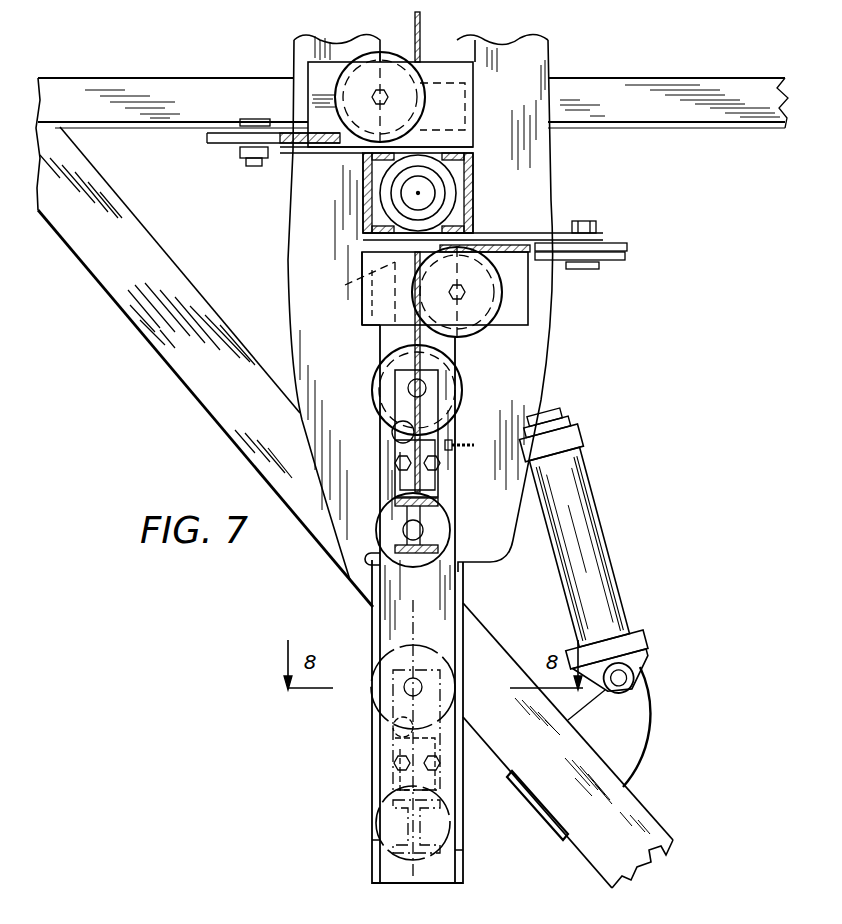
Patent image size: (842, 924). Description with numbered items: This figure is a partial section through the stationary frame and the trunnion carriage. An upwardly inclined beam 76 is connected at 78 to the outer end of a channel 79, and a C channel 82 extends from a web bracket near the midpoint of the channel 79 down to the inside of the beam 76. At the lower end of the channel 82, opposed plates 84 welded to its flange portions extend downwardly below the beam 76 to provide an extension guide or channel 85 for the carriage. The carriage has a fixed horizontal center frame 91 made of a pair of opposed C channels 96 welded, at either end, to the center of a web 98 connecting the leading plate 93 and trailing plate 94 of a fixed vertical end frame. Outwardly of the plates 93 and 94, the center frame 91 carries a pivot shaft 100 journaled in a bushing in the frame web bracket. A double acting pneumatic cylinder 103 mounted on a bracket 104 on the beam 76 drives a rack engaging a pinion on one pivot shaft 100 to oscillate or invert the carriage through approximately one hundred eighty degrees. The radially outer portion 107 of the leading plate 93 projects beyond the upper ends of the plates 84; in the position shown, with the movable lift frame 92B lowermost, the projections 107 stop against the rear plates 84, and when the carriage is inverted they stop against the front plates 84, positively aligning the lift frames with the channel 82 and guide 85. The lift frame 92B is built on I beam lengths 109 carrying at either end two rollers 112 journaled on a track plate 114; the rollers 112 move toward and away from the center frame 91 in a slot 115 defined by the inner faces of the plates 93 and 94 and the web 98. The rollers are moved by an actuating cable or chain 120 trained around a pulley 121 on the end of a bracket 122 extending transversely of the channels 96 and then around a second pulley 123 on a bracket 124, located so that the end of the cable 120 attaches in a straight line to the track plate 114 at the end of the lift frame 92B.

The inclined beam 76 is at (234, 442).
The connection 78 is at (65, 122).
The channel 79 is at (688, 118).
The C channel 82 is at (387, 598).
The opposed plates 84 is at (374, 840).
The extension guide 85 is at (386, 758).
The center frame 91 is at (363, 222).
The lift frame 92B is at (390, 822).
The leading plate 93 is at (291, 272).
The trailing plate 94 is at (540, 356).
The opposed C channels 96 is at (363, 196).
The web 98 is at (360, 280).
The pivot shaft 100 is at (422, 204).
The double acting pneumatic cylinder 103 is at (594, 576).
The bracket 104 is at (632, 742).
The radially outer portion 107 is at (366, 578).
The I beam lengths 109 is at (424, 529).
The rollers 112 is at (456, 384).
The track plate 114 is at (434, 416).
The slot 115 is at (436, 52).
The actuating cables or chains 120 is at (396, 48).
The pulley 121 is at (215, 147).
The bracket 122 is at (270, 165).
The second pulley 123 is at (336, 95).
The bracket 124 is at (310, 98).